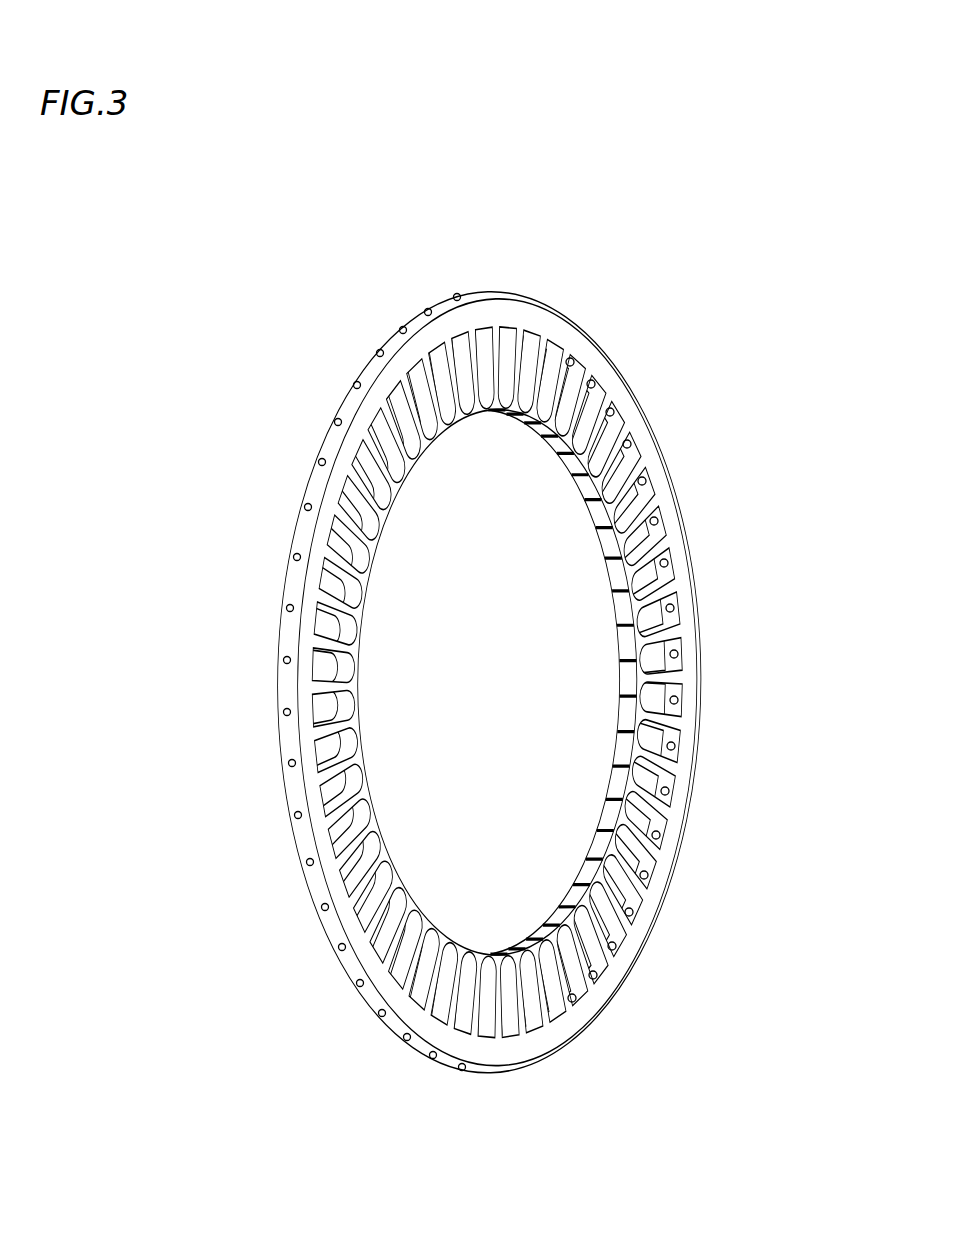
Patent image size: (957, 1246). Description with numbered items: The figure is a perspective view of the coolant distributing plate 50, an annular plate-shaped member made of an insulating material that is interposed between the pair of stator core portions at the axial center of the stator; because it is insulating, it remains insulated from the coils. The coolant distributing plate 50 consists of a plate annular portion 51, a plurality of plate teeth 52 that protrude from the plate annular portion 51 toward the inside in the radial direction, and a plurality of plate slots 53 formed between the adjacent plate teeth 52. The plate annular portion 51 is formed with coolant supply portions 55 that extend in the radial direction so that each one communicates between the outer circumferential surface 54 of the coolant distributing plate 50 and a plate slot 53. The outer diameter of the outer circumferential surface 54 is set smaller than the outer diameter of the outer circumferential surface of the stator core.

The coolant distributing plate 50 is at (706, 238).
The plate annular portion 51 is at (702, 583).
The plate teeth 52 is at (643, 834).
The plate slots 53 is at (684, 758).
The outer circumferential surface 54 is at (320, 488).
The coolant supply portion 55 is at (352, 395).